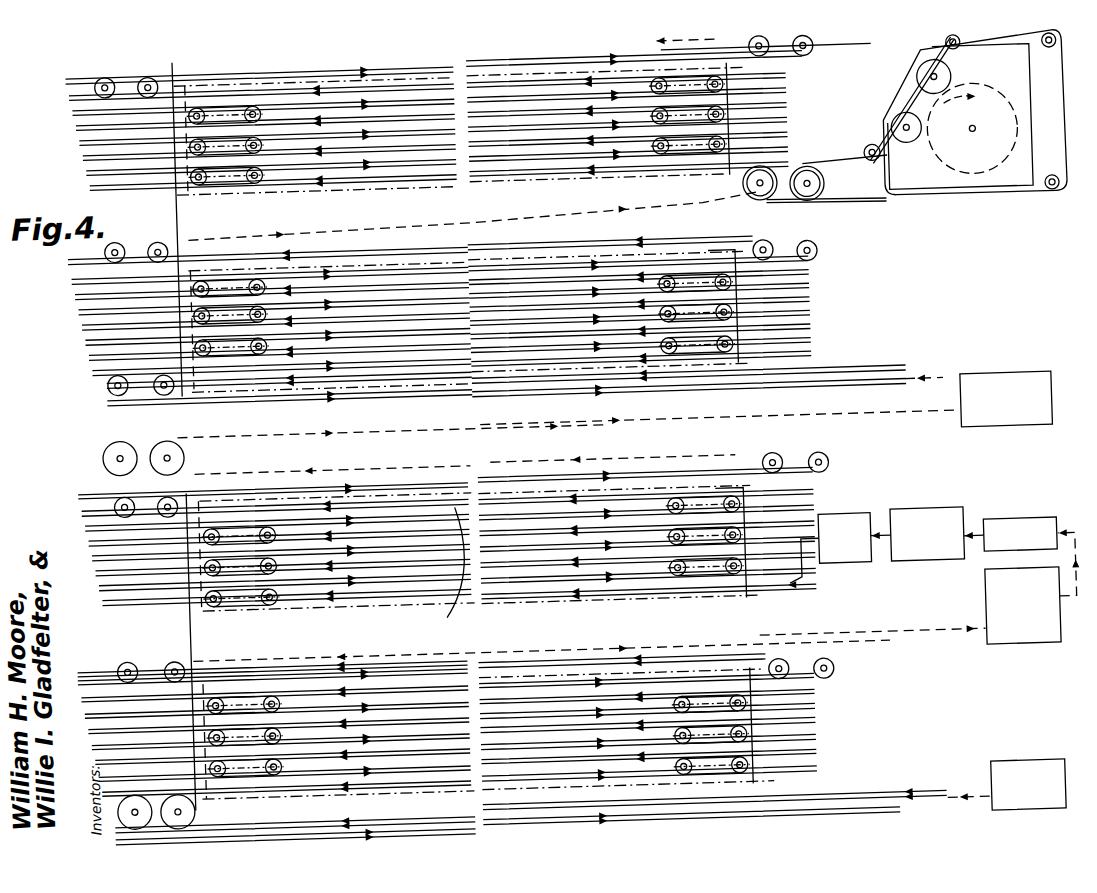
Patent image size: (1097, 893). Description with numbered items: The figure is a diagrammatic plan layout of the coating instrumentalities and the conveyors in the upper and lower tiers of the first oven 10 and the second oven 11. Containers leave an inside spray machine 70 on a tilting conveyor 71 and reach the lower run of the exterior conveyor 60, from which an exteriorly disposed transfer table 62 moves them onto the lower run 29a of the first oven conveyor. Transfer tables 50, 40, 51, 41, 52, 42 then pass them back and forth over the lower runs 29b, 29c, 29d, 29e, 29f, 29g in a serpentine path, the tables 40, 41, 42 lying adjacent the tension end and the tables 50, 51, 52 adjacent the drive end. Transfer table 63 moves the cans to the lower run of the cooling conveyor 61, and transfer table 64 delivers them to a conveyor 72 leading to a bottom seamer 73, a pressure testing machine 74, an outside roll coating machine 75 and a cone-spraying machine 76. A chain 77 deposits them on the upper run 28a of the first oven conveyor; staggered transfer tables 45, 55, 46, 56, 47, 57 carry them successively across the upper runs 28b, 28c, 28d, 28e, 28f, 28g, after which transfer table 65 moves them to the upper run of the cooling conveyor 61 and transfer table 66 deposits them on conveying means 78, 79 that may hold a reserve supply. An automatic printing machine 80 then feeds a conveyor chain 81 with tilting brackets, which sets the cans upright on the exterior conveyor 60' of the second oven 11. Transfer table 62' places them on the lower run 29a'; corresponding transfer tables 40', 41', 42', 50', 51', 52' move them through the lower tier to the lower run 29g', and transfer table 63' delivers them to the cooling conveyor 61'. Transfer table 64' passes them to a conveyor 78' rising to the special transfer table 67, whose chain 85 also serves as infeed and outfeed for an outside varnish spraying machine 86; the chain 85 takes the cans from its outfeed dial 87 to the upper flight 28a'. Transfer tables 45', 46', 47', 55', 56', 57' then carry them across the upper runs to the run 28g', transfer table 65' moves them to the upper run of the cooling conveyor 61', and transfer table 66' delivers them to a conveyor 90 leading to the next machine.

The first oven 10 is at (341, 682).
The second oven 11 is at (347, 276).
The upper run of first oven conveyor 28a is at (458, 607).
The upper run of oven conveyor 28b is at (648, 590).
The upper run of oven conveyor 28c is at (606, 572).
The upper run of oven conveyor 28d is at (562, 560).
The upper run of oven conveyor 28e is at (526, 545).
The upper run of oven conveyor 28f is at (486, 535).
The upper run of last oven conveyor 28g is at (630, 559).
The upper flight of first oven conveyor of second oven 28a' is at (629, 184).
The upper run of last oven conveyor of second oven 28g' is at (633, 57).
The lower run of first oven conveyor 29a is at (460, 798).
The lower run of oven conveyor 29b is at (380, 770).
The lower run of oven conveyor 29c is at (412, 768).
The lower run of oven conveyor 29d is at (490, 775).
The lower run of oven conveyor 29e is at (532, 765).
The lower run of oven conveyor 29f is at (578, 755).
The lower run of last oven conveyor 29g is at (648, 745).
The lower run of first oven conveyor of second oven 29a' is at (452, 387).
The lower run of last oven conveyor of second oven 29g' is at (744, 239).
The transfer table 40 is at (246, 791).
The transfer table 41 is at (256, 775).
The transfer table 42 is at (275, 759).
The transfer table of second oven 40' is at (231, 377).
The transfer table of second oven 41' is at (247, 361).
The transfer table of second oven 42' is at (270, 348).
The transfer table 45 is at (241, 613).
The transfer table 46 is at (253, 596).
The transfer table 47 is at (273, 580).
The transfer table of second oven 45' is at (227, 194).
The transfer table of second oven 46' is at (243, 179).
The transfer table of second oven 47' is at (268, 162).
The transfer table 50 is at (711, 781).
The transfer table 51 is at (698, 693).
The transfer table 52 is at (709, 677).
The transfer table of second oven 50' is at (697, 367).
The transfer table of second oven 51' is at (679, 353).
The transfer table of second oven 52' is at (657, 338).
The transfer table 55 is at (715, 590).
The transfer table 56 is at (690, 499).
The transfer table 57 is at (703, 484).
The transfer table of second oven 55' is at (690, 168).
The transfer table of second oven 56' is at (677, 153).
The transfer table of second oven 57' is at (657, 139).
The exterior endless conveyor 60 is at (714, 797).
The exterior conveyor of second oven 60' is at (689, 387).
The cooling conveyor 61 is at (422, 569).
The cooling conveyor of second oven 61' is at (409, 145).
The exterior transfer table 62 is at (294, 815).
The exterior transfer table of second oven 62' is at (290, 392).
The transfer table 63 is at (801, 658).
The transfer table of second oven 63' is at (838, 270).
The exterior transfer table 64 is at (151, 661).
The exterior transfer table of second oven 64' is at (139, 242).
The exterior transfer table 65 is at (146, 498).
The exterior transfer table of second oven 65' is at (127, 76).
The transfer table 66 is at (795, 451).
The transfer table of second oven 66' is at (765, 57).
The special transfer table 67 is at (802, 190).
The inside spray machine 70 is at (999, 795).
The tilting conveyor 71 is at (968, 780).
The conveyor 72 is at (286, 676).
The bottom seamer 73 is at (999, 676).
The pressure testing machine 74 is at (1016, 548).
The outside roll coating machine 75 is at (924, 544).
The cone-spraying machine 76 is at (849, 546).
The chain 77 is at (786, 602).
The conveyor 78 is at (613, 451).
The conveyor 78' is at (472, 219).
The conveyor 79 is at (675, 428).
The automatic printing machine 80 is at (1003, 398).
The conveyor chain 81 is at (876, 406).
The chain 85 is at (874, 228).
The outside varnish spraying machine 86 is at (990, 136).
The outfeed dial 87 is at (905, 172).
The conveyor 90 is at (718, 55).